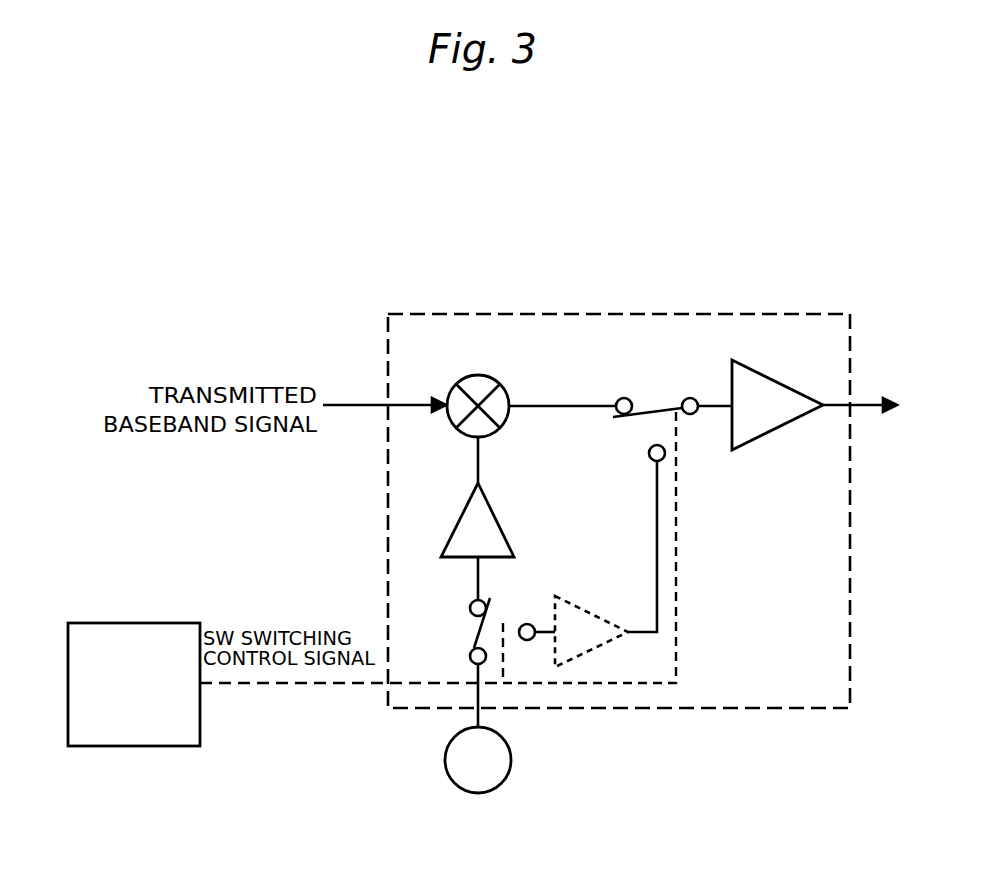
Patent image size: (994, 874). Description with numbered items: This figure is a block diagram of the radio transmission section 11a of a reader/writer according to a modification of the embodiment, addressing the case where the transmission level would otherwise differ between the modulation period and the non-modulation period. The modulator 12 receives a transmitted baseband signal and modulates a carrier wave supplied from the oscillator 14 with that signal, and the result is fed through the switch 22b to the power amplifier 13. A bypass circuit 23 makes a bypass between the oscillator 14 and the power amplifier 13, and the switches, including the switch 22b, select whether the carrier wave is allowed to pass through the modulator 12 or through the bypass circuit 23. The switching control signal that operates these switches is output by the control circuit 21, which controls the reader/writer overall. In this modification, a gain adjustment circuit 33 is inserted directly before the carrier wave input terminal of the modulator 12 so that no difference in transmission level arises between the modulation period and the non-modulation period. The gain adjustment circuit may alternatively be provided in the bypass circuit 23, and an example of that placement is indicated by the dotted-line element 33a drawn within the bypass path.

The radio transmission section 11a is at (757, 314).
The modulator 12 is at (468, 375).
The switch 22b is at (645, 404).
The power amplifier 13 is at (760, 375).
The gain adjustment circuit 33 is at (493, 512).
The gain adjustment circuit (in bypass circuit) 33a is at (578, 607).
The bypass circuit 23 is at (658, 525).
The oscillator 14 is at (511, 752).
The control circuit 21 is at (112, 746).